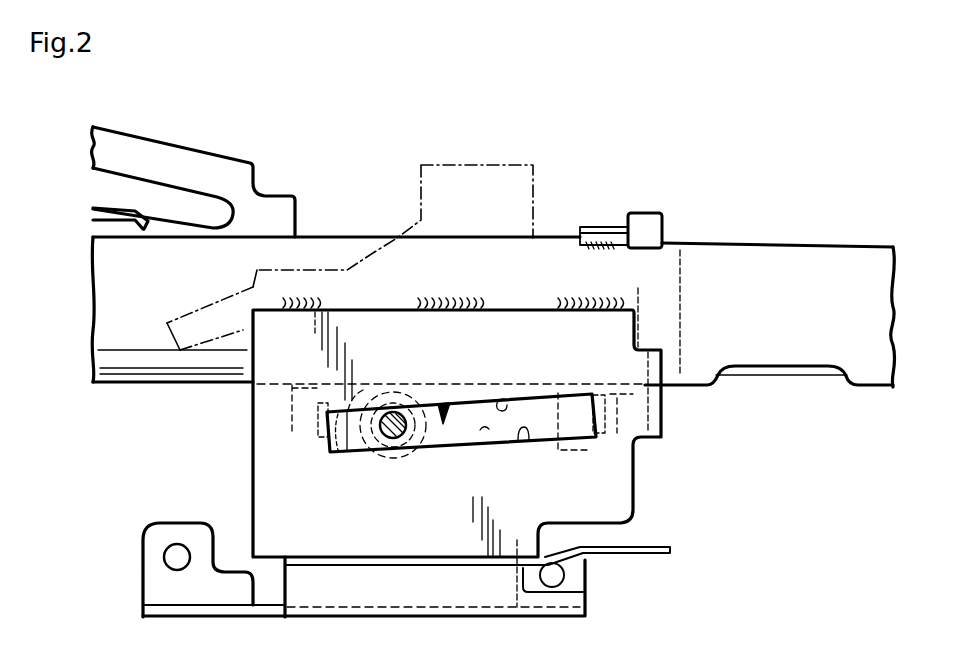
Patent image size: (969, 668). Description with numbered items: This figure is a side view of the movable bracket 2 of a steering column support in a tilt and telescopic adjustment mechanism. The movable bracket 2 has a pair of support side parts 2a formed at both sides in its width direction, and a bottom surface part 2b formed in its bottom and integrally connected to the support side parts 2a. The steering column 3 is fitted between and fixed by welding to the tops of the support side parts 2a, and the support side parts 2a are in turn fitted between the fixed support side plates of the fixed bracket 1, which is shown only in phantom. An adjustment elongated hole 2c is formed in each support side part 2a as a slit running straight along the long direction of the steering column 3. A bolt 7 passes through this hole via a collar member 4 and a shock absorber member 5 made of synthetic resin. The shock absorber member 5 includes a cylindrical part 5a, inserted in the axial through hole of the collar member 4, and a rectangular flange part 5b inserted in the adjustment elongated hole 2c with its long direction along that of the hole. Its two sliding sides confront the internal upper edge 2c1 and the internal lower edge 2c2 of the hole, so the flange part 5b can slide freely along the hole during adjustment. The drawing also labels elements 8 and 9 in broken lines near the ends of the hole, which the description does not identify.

The fixed bracket 1 is at (486, 163).
The movable bracket 2 is at (248, 458).
The support side part 2a is at (267, 505).
The bottom surface part 2b is at (347, 567).
The adjustment elongated hole 2c is at (484, 432).
The internal upper edge 2c1 is at (509, 397).
The internal lower edge 2c2 is at (523, 432).
The steering column 3 is at (782, 258).
The collar member 4 is at (410, 459).
The shock absorber member 5 is at (442, 403).
The cylindrical part 5a is at (418, 440).
The flange part 5b is at (347, 450).
The bolt 7 is at (388, 440).
The stopper 8 is at (457, 426).
The spring 9 is at (363, 390).